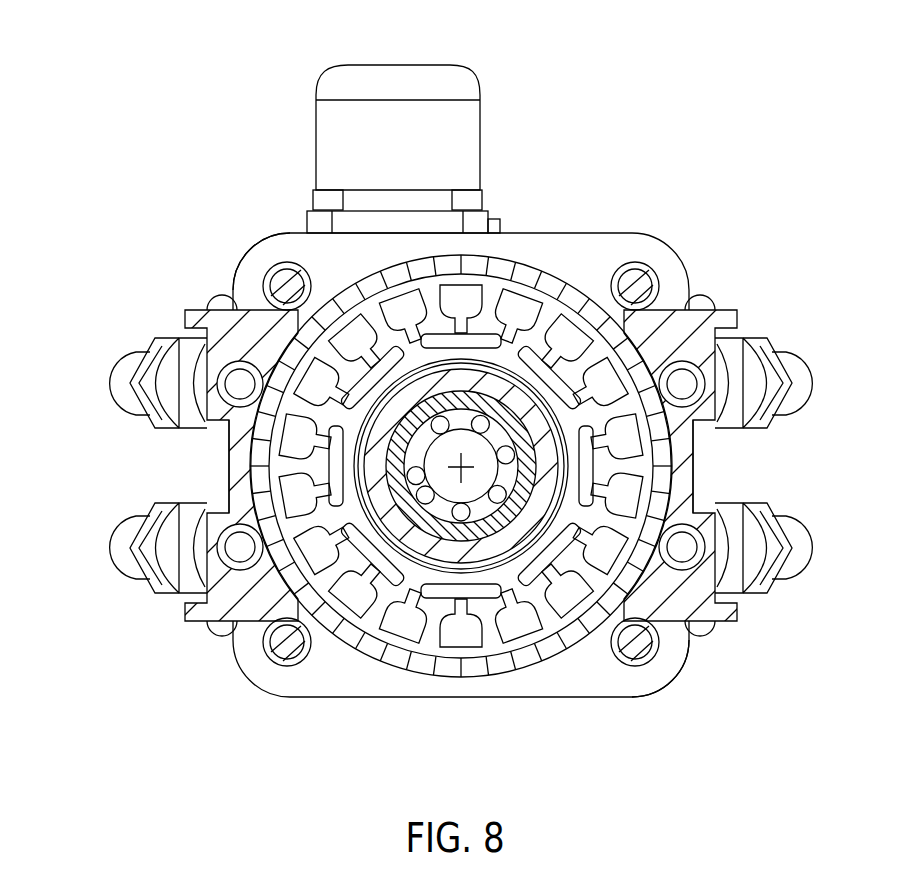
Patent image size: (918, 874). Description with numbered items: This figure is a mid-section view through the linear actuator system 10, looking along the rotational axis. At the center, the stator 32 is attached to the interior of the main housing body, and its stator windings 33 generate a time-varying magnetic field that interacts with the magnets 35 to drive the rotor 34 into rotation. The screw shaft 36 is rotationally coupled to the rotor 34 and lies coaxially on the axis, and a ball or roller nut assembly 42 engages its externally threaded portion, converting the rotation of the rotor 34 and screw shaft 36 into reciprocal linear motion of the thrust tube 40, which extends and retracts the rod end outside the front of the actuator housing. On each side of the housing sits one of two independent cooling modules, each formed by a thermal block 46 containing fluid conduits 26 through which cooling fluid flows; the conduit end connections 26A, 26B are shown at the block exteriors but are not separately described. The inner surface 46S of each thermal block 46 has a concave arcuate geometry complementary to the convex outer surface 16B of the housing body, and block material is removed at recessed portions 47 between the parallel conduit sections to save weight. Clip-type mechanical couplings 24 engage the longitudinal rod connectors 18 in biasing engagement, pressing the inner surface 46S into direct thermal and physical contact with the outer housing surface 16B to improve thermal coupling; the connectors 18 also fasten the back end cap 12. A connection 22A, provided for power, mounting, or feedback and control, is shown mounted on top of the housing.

The linear actuator system 10 is at (218, 68).
The back end cap 12 is at (620, 233).
The convex outer surface 16B is at (520, 675).
The mechanical connectors 18 is at (648, 280).
The connection 22A is at (396, 62).
The clip-type mechanical couplings 24 is at (243, 272).
The fluid conduits 26 is at (178, 350).
The first port connector 26A is at (124, 366).
The second port connector 26B is at (124, 530).
The stator 32 is at (492, 300).
The stator windings 33 is at (522, 300).
The rotor 34 is at (395, 330).
The magnets 35 is at (355, 400).
The screw shaft 36 is at (468, 486).
The thrust tube 40 is at (403, 542).
The nut assembly 42 is at (442, 508).
The thermal blocks 46 is at (703, 308).
The inner surface 46S is at (693, 481).
The recessed portions 47 is at (228, 468).